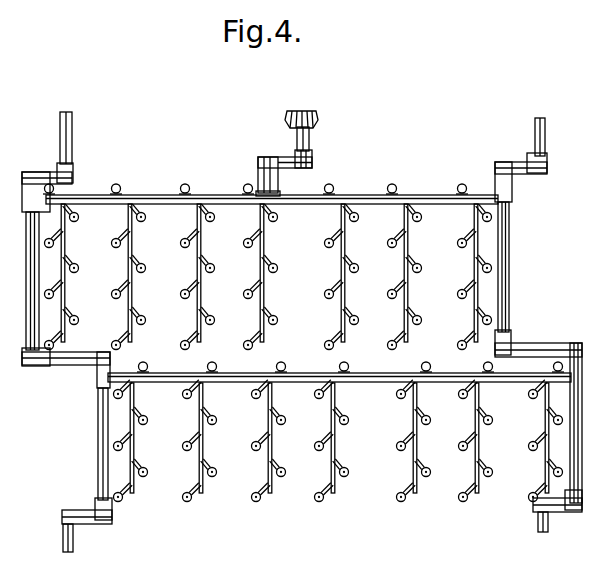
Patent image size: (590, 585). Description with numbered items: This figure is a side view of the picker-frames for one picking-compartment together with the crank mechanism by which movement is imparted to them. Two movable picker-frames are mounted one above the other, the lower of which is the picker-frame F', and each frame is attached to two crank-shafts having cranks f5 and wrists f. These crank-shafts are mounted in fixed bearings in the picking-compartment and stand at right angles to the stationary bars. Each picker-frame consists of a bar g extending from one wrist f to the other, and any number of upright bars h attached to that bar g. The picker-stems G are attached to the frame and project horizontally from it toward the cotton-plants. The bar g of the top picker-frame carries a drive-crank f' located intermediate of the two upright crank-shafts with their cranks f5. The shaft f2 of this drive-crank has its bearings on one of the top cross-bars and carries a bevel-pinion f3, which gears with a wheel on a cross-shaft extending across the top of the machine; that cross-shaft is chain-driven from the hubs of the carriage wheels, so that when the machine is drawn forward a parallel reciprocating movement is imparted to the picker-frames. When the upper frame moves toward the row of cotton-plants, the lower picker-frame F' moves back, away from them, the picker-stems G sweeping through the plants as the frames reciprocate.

The picker-frame F' is at (307, 335).
The wrist f is at (292, 341).
The drive-crank f' is at (283, 166).
The shaft of the drive-crank f2 is at (310, 139).
The bevel-pinion f3 is at (290, 118).
The crank f5 is at (60, 172).
The bar g is at (372, 200).
The upright bar h is at (132, 294).
The picker-stem G is at (118, 191).